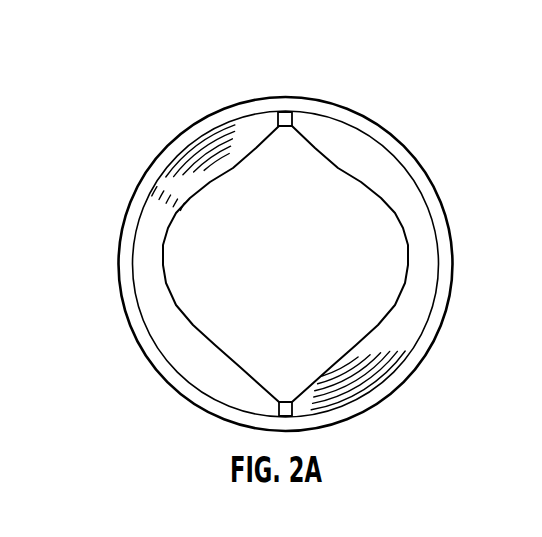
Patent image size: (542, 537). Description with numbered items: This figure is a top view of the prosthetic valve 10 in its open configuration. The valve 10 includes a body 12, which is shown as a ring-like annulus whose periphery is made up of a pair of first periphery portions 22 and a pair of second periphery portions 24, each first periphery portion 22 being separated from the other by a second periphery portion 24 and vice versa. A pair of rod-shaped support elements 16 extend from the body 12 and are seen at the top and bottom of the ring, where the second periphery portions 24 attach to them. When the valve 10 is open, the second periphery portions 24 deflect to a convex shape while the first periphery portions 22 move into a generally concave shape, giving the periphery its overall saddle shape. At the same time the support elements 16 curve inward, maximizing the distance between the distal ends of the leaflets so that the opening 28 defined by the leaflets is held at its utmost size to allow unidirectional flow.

The prosthetic valve 10 is at (420, 122).
The body 12 is at (356, 417).
The support element 16 is at (286, 119).
The first periphery portion 22 is at (448, 278).
The second periphery portion 24 is at (285, 105).
The opening 28 is at (296, 265).